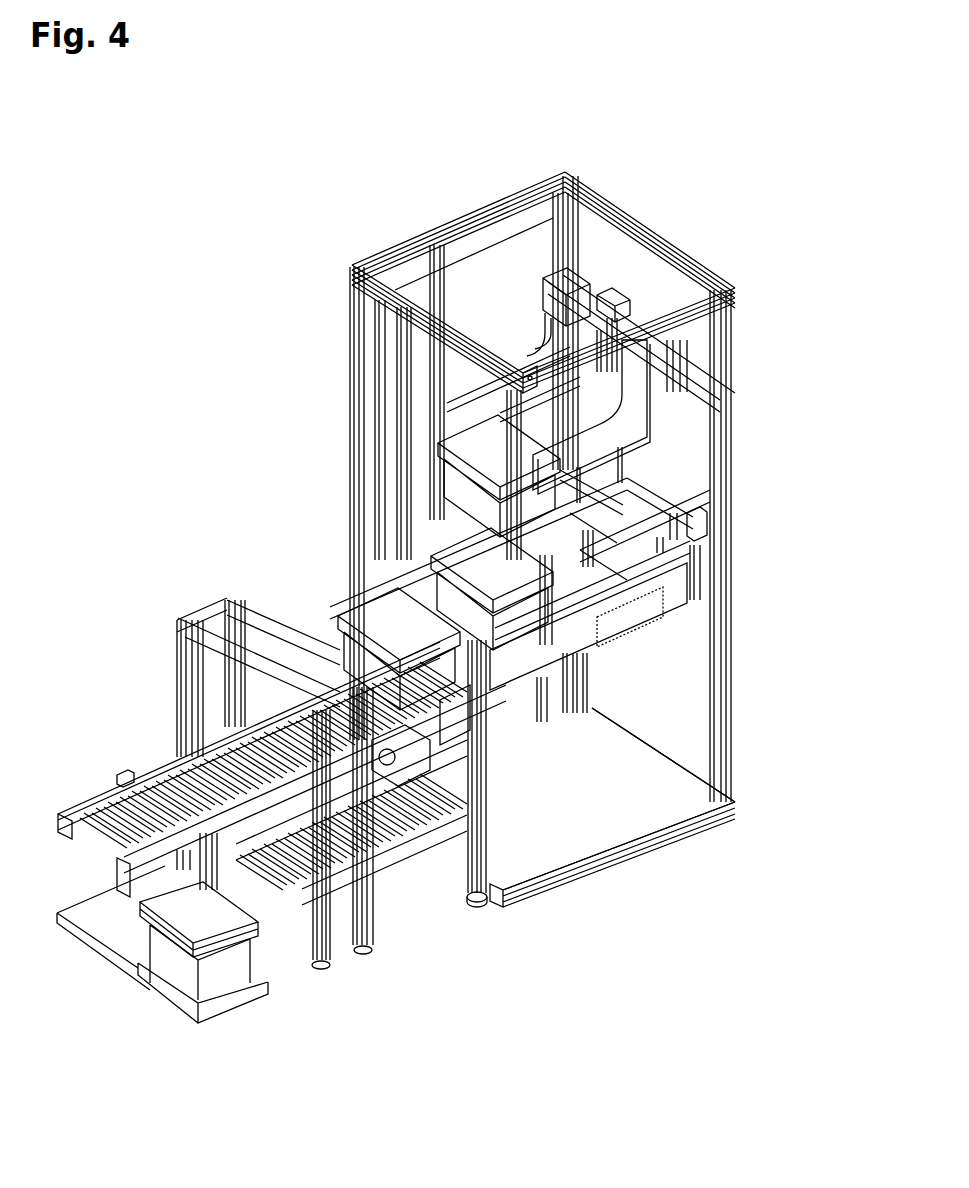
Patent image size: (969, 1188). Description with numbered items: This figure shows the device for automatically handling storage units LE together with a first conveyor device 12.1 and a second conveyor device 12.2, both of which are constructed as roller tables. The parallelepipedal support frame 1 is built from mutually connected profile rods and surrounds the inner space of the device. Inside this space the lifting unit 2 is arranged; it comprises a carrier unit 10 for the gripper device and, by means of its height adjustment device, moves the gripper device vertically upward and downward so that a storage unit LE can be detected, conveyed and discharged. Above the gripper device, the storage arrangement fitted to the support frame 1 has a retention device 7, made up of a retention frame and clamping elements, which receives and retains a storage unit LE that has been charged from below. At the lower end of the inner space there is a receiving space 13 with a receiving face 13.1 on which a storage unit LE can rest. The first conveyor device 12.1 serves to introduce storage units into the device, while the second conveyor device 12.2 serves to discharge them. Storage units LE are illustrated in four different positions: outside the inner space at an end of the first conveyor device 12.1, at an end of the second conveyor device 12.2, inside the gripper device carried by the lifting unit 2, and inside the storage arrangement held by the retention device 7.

The support frame 1 is at (736, 356).
The lifting unit 2 is at (647, 643).
The retention device 7 is at (655, 437).
The carrier unit 10 is at (675, 601).
The first conveyor device 12.1 is at (393, 830).
The second conveyor device 12.2 is at (167, 790).
The receiving space 13 is at (610, 777).
The receiving face 13.1 is at (578, 817).
The storage unit LE is at (477, 443).